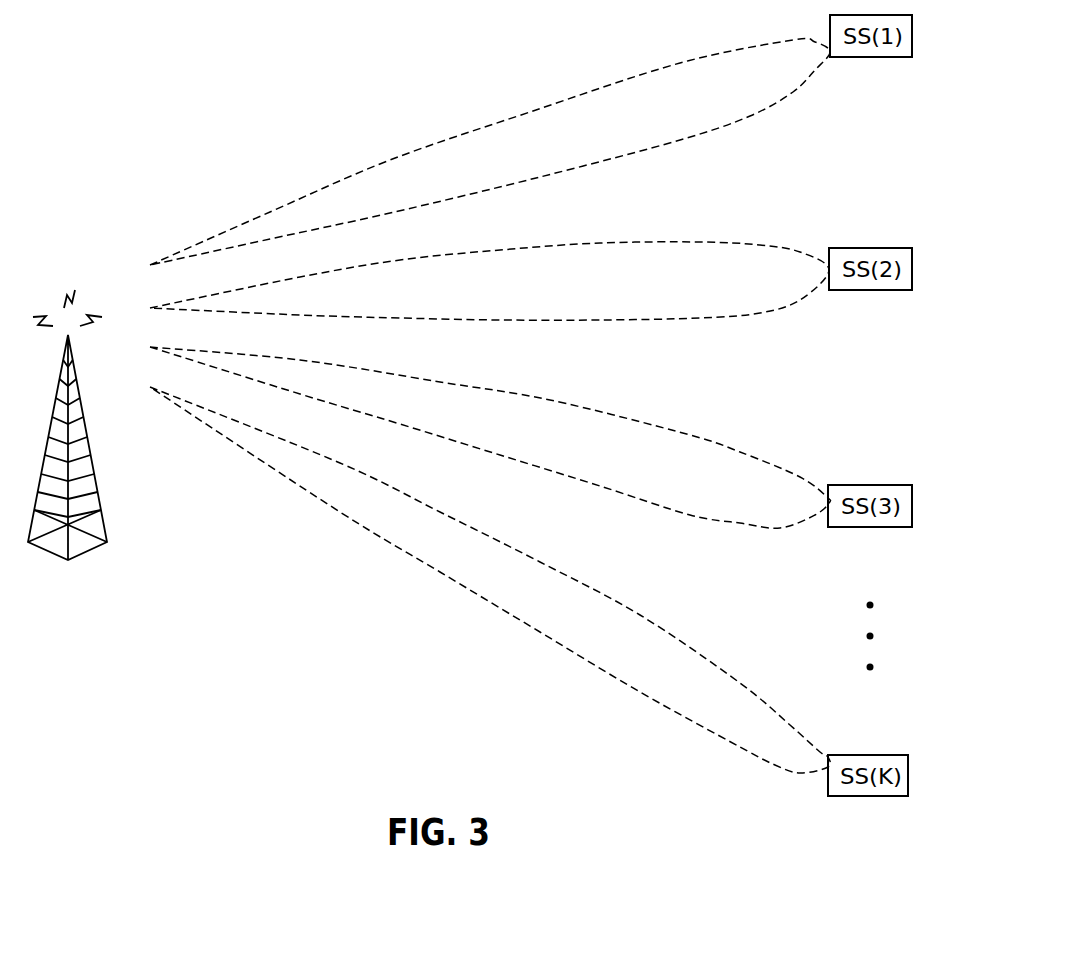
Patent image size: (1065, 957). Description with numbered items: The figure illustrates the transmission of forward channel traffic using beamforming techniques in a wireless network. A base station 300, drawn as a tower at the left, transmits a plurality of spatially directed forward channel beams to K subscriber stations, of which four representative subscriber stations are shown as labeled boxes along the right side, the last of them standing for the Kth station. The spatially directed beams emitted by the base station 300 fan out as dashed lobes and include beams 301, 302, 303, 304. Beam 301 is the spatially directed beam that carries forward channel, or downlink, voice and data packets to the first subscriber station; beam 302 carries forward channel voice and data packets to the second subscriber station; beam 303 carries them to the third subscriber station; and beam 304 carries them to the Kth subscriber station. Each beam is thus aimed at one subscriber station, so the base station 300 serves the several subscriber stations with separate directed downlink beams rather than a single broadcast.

The base station 300 is at (68, 560).
The beam 301 is at (268, 211).
The beam 302 is at (340, 316).
The beam 303 is at (551, 400).
The beam 304 is at (544, 563).